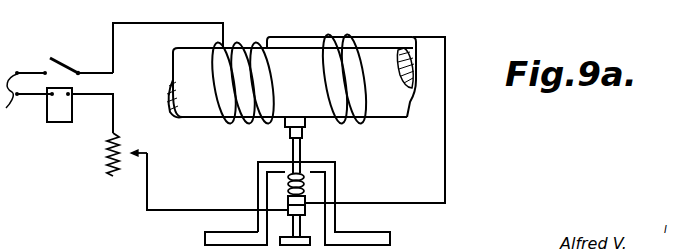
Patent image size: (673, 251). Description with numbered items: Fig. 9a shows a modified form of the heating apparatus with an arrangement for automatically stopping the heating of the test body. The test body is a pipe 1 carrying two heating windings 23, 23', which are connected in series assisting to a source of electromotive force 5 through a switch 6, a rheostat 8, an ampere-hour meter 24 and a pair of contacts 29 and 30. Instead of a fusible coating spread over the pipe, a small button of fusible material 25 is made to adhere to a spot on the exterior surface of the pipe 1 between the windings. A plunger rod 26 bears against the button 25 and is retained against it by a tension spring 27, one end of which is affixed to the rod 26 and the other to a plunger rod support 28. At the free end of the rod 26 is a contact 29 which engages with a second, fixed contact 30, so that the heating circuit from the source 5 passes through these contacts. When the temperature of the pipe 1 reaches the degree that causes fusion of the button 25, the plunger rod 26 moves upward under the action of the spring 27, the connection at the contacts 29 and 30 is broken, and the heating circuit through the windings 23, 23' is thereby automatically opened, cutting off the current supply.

The pipe 1 is at (392, 52).
The source of electromotive force 5 is at (13, 100).
The switch 6 is at (64, 67).
The rheostat 8 is at (106, 164).
The winding 23 is at (243, 64).
The winding 23' is at (346, 64).
The ampere-hour meter 24 is at (50, 122).
The button of fusible material 25 is at (306, 124).
The plunger rod 26 is at (302, 151).
The tension spring 27 is at (305, 187).
The plunger rod support 28 is at (258, 168).
The contact 29 is at (305, 200).
The fixed contact 30 is at (305, 211).